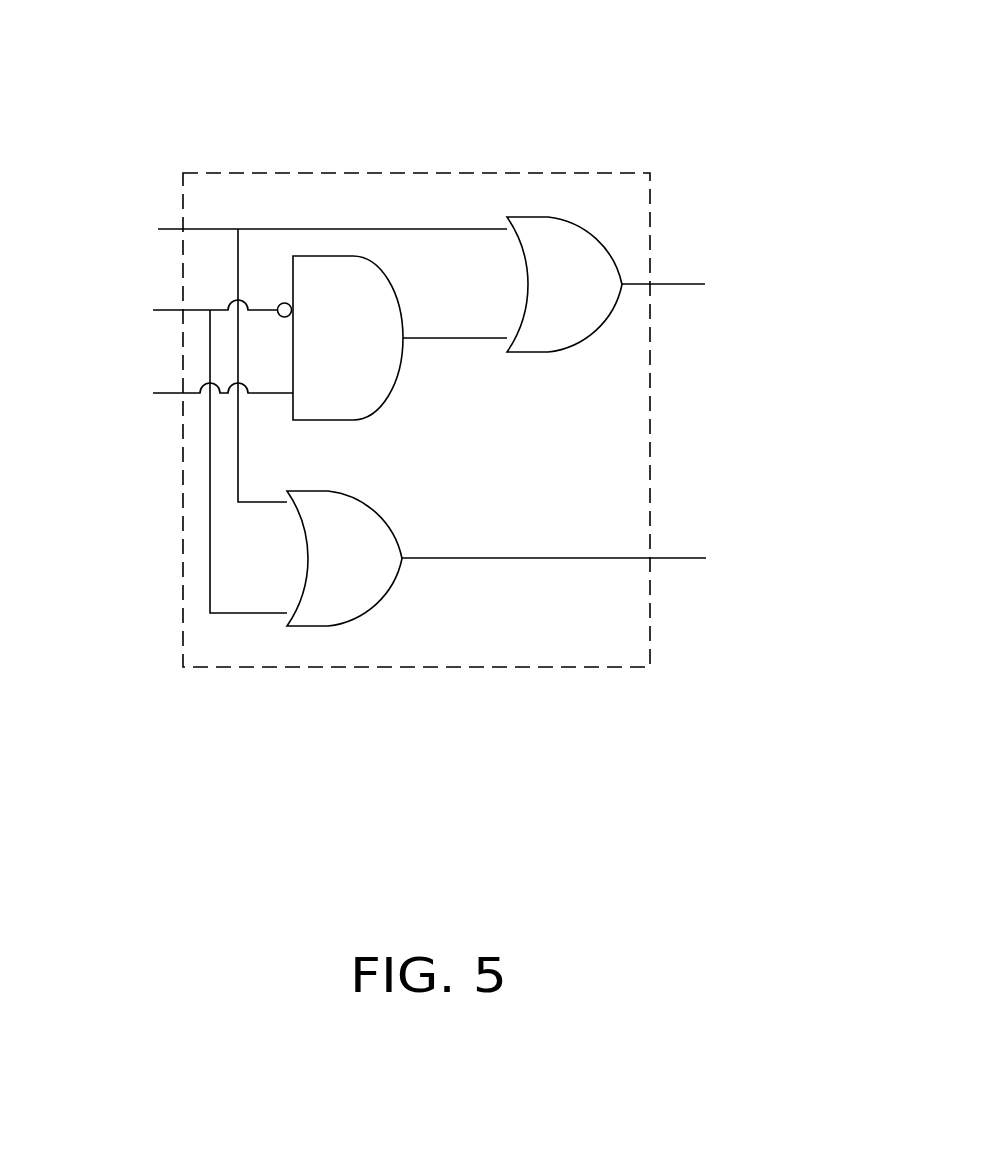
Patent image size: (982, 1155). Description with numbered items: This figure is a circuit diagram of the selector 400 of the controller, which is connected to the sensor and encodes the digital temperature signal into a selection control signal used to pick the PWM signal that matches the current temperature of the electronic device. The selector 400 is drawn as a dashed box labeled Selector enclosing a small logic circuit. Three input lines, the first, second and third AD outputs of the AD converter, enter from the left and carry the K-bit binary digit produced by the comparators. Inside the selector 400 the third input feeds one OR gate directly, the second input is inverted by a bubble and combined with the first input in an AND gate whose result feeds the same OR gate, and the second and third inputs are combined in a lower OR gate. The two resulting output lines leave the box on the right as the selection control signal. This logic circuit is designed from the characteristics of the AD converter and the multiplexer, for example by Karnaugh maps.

The selector 400 is at (416, 173).